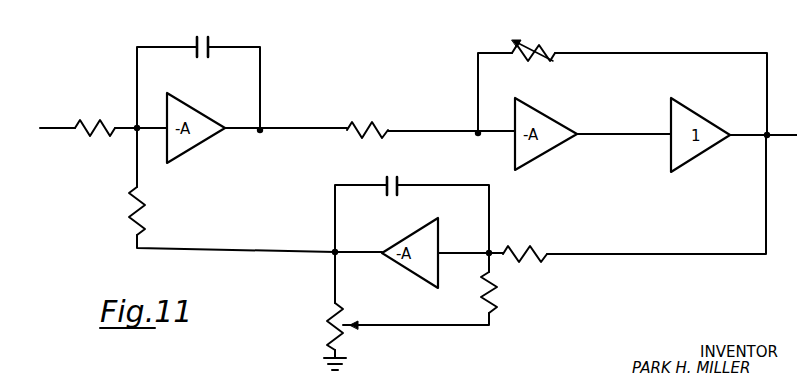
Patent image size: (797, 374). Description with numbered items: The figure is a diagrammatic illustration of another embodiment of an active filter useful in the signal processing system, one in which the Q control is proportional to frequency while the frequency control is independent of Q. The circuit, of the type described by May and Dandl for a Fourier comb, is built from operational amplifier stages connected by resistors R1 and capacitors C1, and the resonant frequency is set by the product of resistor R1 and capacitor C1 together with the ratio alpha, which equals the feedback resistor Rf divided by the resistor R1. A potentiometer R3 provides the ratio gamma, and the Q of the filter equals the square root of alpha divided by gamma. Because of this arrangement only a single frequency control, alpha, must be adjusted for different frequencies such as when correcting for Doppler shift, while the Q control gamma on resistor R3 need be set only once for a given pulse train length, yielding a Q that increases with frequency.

The resistor R1 is at (311, 205).
The capacitor C1 is at (308, 107).
The feedback resistor Rf is at (533, 42).
The potentiometer R3 is at (320, 326).